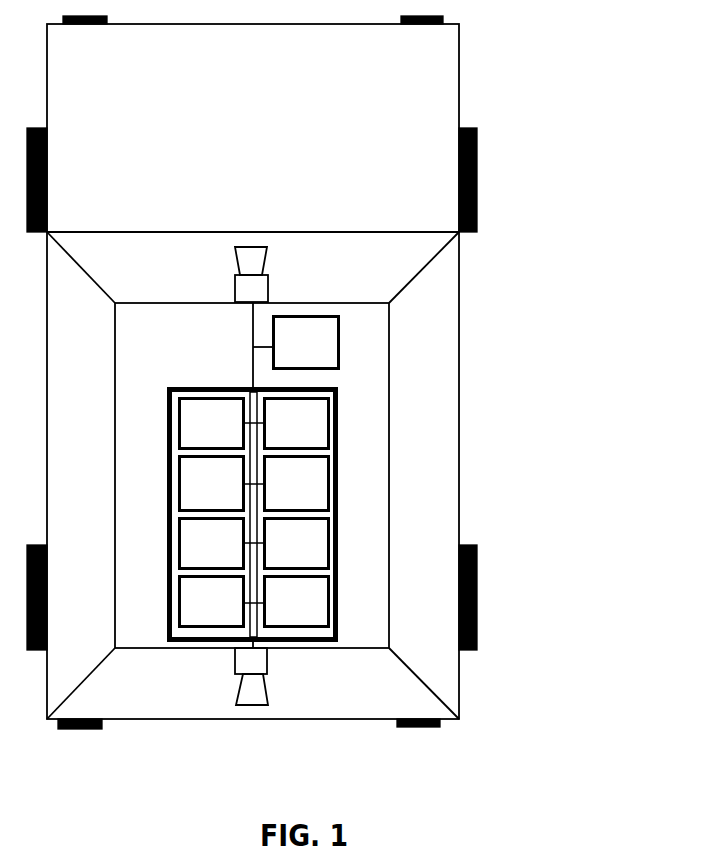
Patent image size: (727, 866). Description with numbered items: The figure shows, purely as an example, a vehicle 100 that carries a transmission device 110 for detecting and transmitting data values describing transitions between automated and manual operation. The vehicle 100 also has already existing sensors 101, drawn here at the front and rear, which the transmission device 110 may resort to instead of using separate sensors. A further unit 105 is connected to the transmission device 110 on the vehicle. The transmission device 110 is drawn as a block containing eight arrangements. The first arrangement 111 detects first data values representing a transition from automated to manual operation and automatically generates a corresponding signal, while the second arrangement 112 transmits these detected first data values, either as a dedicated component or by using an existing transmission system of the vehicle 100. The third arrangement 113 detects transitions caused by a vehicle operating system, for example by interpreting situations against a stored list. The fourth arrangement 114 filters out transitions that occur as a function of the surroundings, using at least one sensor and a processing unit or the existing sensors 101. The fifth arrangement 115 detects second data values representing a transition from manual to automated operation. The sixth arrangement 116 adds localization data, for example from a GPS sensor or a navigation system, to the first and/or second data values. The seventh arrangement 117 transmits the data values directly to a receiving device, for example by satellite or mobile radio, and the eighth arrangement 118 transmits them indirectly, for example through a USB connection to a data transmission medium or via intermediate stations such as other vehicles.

The vehicle 100 is at (372, 119).
The sensors 101 is at (252, 258).
The controller 105 is at (296, 343).
The transmission device 110 is at (213, 388).
The first arrangement 111 is at (212, 424).
The second arrangement 112 is at (212, 484).
The third arrangement 113 is at (212, 544).
The fourth arrangement 114 is at (212, 602).
The fifth arrangement 115 is at (297, 424).
The sixth arrangement 116 is at (297, 484).
The seventh arrangement 117 is at (297, 544).
The eighth arrangement 118 is at (297, 602).